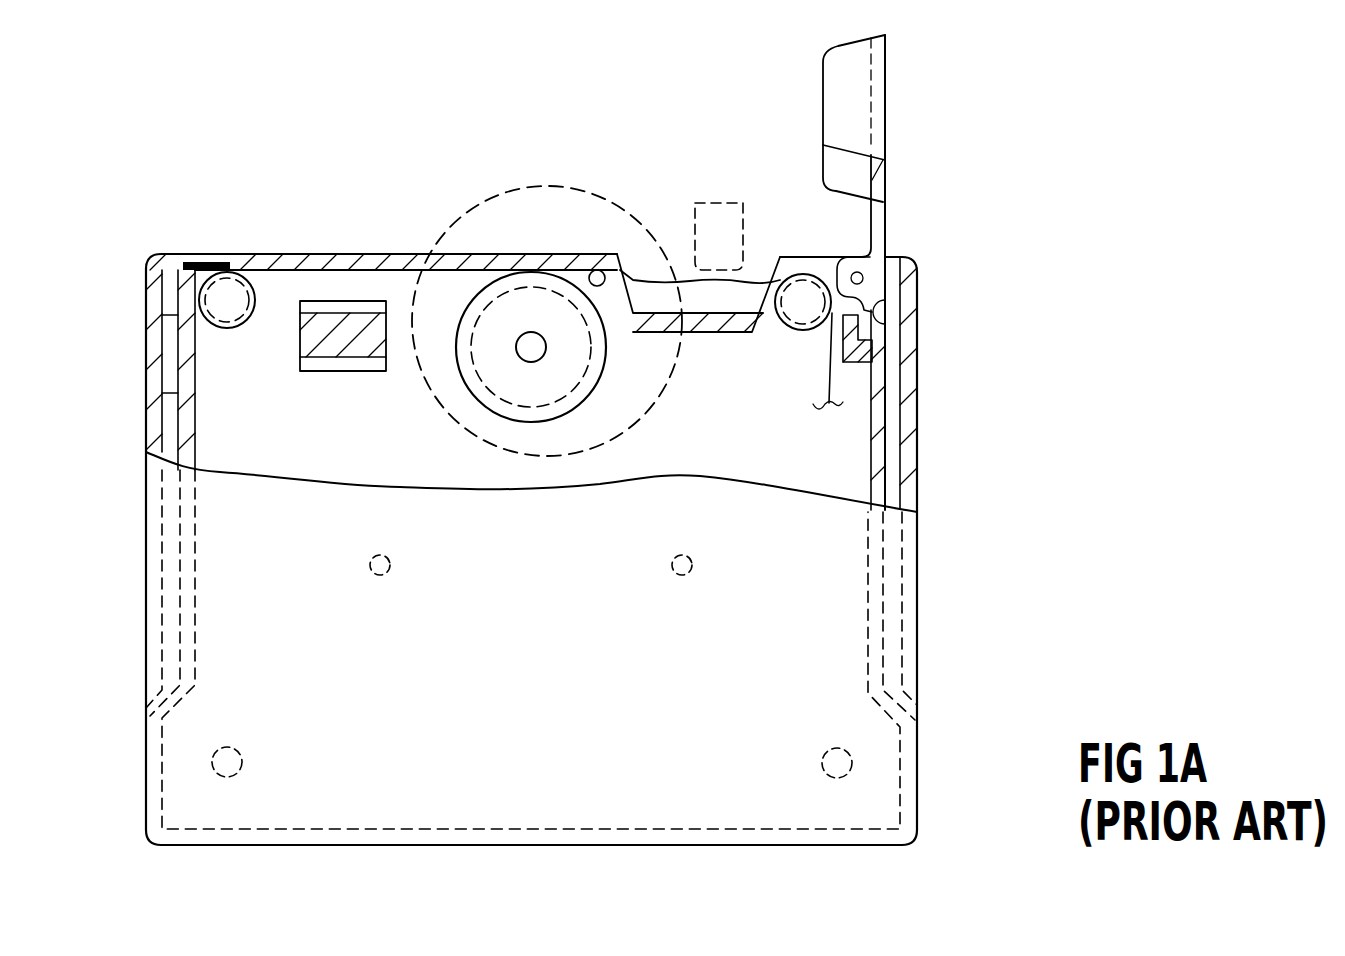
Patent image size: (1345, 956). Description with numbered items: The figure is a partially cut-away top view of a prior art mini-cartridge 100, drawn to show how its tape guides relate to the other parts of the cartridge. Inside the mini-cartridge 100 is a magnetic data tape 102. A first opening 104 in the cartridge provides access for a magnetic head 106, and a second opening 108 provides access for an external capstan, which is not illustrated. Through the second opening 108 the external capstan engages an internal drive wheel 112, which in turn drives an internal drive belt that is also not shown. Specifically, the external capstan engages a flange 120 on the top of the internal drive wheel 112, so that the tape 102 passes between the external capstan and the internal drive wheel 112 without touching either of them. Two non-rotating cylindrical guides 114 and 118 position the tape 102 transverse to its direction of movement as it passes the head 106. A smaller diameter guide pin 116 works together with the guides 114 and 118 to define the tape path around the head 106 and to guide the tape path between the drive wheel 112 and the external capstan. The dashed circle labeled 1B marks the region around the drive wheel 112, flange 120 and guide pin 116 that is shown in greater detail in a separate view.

The mini-cartridge 100 is at (920, 792).
The magnetic data tape 102 is at (827, 378).
The first opening 104 is at (668, 213).
The magnetic head 106 is at (733, 200).
The second opening 108 is at (543, 165).
The internal drive wheel 112 is at (582, 378).
The non-rotating cylindrical guide 114 is at (818, 273).
The guide pin 116 is at (598, 268).
The non-rotating cylindrical guide 118 is at (200, 262).
The flange 120 is at (472, 392).
The detail view indicator 1B is at (513, 190).